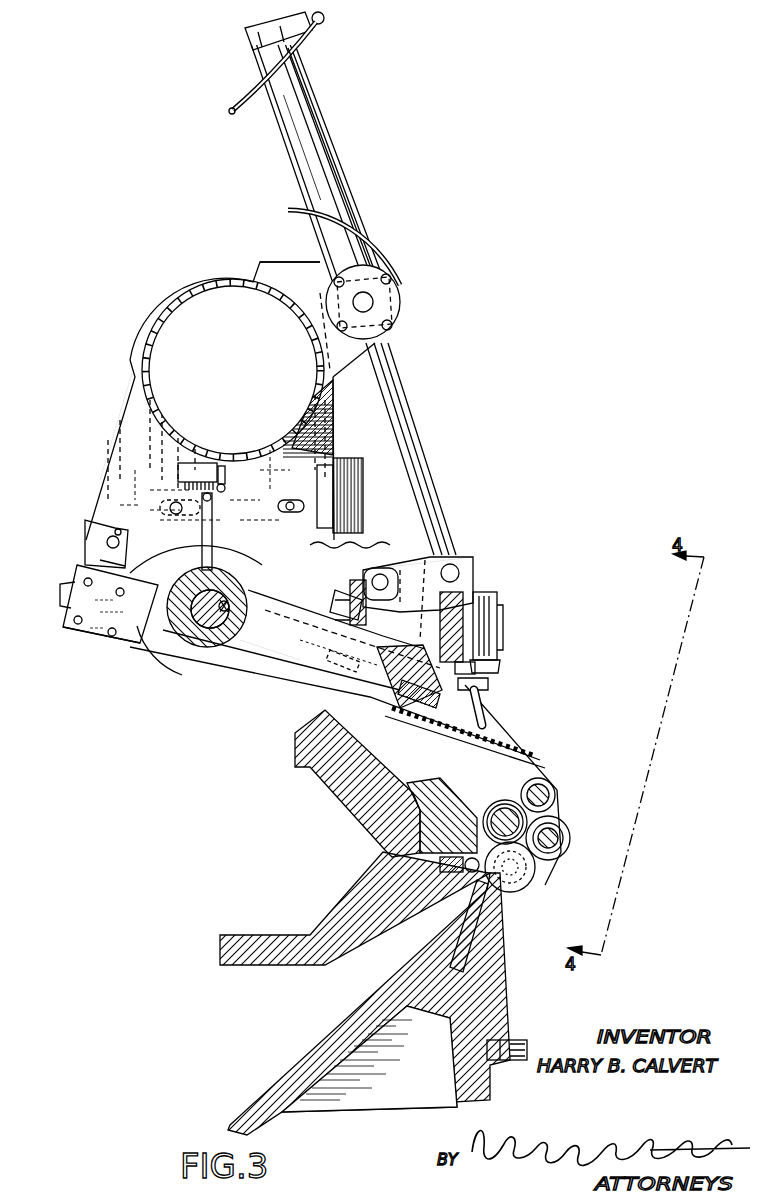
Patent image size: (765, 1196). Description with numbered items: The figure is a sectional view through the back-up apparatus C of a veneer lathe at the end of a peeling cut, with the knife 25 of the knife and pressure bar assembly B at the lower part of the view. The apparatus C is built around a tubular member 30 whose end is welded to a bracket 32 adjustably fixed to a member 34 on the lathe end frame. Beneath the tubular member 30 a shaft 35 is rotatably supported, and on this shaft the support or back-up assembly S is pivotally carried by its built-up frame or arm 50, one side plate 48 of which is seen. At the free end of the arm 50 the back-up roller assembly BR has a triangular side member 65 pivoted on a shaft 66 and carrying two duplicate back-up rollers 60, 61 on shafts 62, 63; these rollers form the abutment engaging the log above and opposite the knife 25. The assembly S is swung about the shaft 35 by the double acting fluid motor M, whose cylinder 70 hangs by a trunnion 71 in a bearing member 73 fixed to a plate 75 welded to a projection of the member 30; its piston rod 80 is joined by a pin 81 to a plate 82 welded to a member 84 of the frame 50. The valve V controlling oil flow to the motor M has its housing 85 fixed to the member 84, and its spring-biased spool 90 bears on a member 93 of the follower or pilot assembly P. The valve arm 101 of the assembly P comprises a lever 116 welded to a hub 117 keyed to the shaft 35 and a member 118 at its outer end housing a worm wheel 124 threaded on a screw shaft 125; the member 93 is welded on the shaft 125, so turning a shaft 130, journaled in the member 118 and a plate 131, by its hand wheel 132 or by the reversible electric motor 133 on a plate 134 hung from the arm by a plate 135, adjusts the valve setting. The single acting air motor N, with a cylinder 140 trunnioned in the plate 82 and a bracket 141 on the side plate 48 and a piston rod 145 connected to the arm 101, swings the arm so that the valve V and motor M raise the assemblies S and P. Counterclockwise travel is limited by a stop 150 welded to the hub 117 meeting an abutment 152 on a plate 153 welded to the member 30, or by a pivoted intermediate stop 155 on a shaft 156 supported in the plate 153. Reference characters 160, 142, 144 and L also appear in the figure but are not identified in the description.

The fluid actuated motor M is at (334, 106).
The cylinder 70 is at (346, 190).
The plate 75 is at (297, 262).
The bracket 32 is at (163, 305).
The apparatus C is at (132, 326).
The tubular member 30 is at (165, 303).
The bearing member 73 is at (402, 298).
The trunnion 71 is at (372, 309).
The piston rod 80 is at (398, 383).
The plate 153 is at (140, 430).
The block 160 is at (195, 476).
The member 34 is at (338, 458).
The slot 142 is at (283, 508).
The abutment 152 is at (115, 533).
The stop 150 is at (214, 516).
The shaft 156 is at (107, 542).
The intermediate stop 155 is at (108, 561).
The reversible electric motor 133 is at (78, 598).
The plate 134 is at (80, 633).
The shaft 130 is at (158, 645).
The plate 135 is at (180, 664).
The shaft 35 is at (205, 648).
The hub 117 is at (250, 613).
The pilot assembly P is at (335, 675).
The valve arm 101 is at (282, 688).
The piston rod 145 is at (350, 668).
The lever 116 is at (280, 665).
The arm member 144 is at (364, 676).
The member 118 is at (373, 704).
The worm wheel 124 is at (405, 720).
The screw shaft 125 is at (425, 738).
The side plate 48 is at (514, 730).
The frame 50 is at (540, 756).
The plate 82 is at (428, 568).
The pin 81 is at (450, 564).
The back-up assembly S is at (477, 579).
The fluid pressure motor N is at (366, 580).
The bracket 141 is at (348, 584).
The cylinder 140 is at (350, 606).
The member 84 is at (470, 605).
The valve V is at (498, 602).
The valve housing 85 is at (500, 628).
The valve spool 90 is at (470, 680).
The member 93 is at (485, 687).
The hand wheel 132 is at (482, 702).
The plate-like member 131 is at (455, 772).
The shaft 63 is at (500, 810).
The back-up roller 61 is at (504, 812).
The shaft 66 is at (555, 792).
The back-up roller assembly BR is at (562, 811).
The side member 65 is at (558, 822).
The back-up roller 60 is at (566, 838).
The shaft 62 is at (552, 845).
The lock L is at (537, 875).
The knife and pressure bar assembly B is at (237, 936).
The knife 25 is at (472, 943).